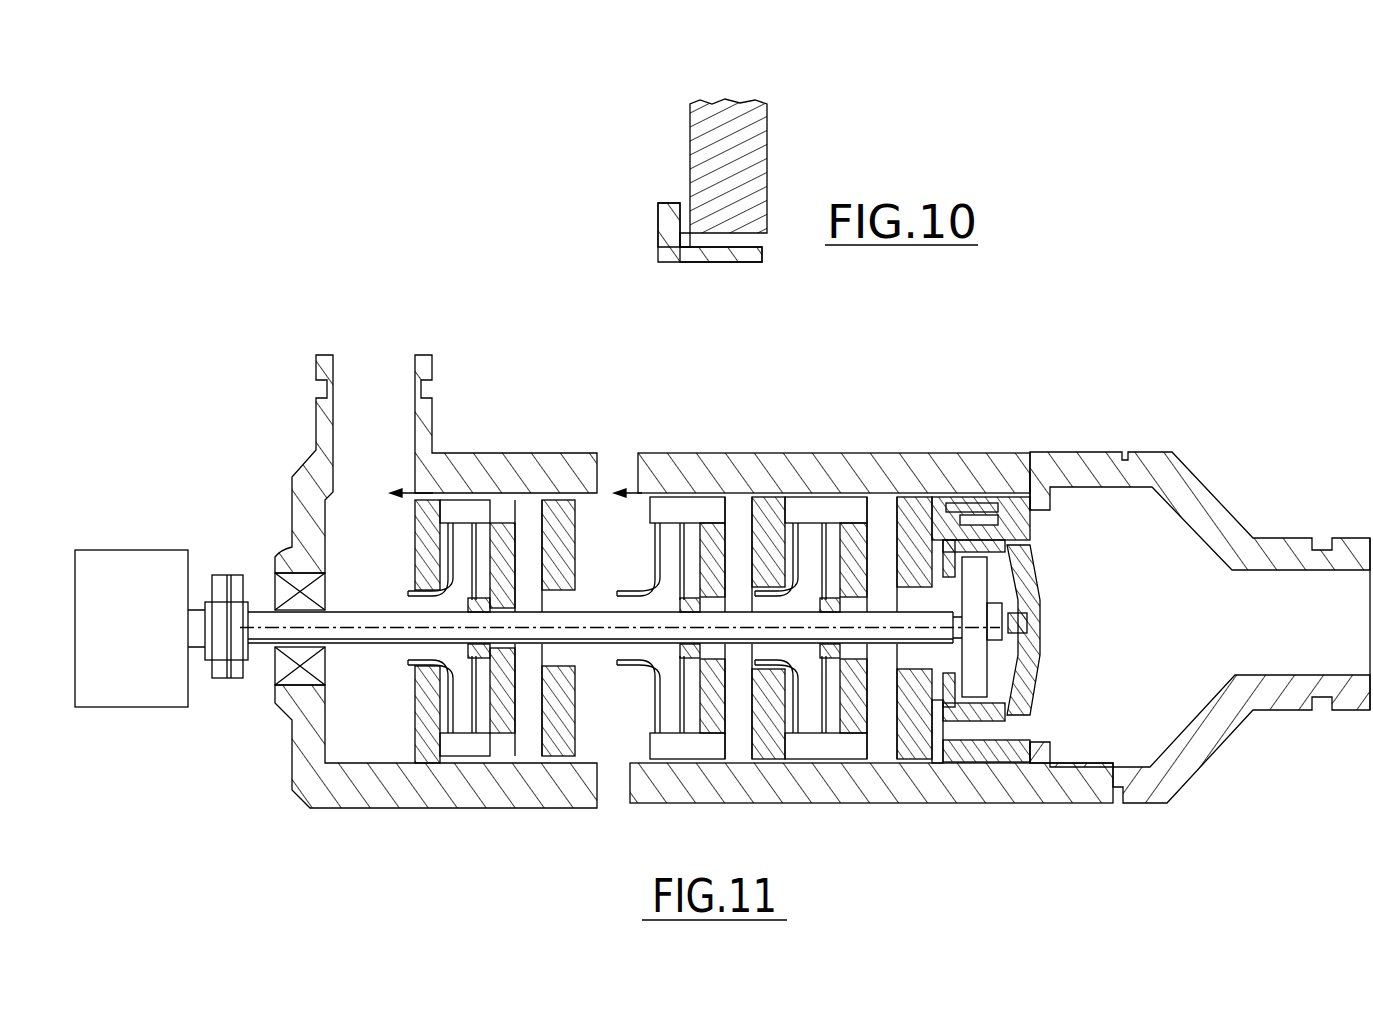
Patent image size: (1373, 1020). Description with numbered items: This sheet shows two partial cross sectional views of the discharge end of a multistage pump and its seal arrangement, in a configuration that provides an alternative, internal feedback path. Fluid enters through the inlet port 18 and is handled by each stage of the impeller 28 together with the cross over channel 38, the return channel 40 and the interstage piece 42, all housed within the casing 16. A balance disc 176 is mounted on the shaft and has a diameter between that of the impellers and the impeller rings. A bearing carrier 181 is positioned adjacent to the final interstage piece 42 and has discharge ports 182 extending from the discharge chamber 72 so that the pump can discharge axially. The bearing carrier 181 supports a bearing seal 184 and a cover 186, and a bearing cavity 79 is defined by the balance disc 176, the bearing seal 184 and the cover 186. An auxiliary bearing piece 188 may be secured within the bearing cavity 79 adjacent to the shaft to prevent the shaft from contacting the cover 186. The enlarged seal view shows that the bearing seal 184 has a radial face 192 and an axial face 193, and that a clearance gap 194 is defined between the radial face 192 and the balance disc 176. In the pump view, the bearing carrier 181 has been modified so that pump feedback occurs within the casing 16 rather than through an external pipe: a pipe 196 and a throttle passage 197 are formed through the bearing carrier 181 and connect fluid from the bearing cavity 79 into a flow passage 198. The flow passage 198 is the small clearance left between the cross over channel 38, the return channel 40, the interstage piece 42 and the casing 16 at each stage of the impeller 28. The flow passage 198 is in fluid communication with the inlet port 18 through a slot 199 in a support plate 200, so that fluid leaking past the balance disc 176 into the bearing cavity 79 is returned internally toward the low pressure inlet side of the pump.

In FIG. 11, the casing 16 is at (923, 793).
In FIG. 11, the inlet port 18 is at (378, 362).
In FIG. 11, the impeller 28 is at (487, 727).
In FIG. 11, the cross over channel 38 is at (678, 752).
In FIG. 11, the return channel 40 is at (735, 750).
In FIG. 11, the interstage piece 42 is at (765, 745).
In FIG. 11, the discharge chamber 72 is at (943, 655).
In FIG. 11, the bearing cavity 79 is at (1010, 582).
In FIG. 10, the balance disc 176 is at (735, 105).
In FIG. 11, the bearing carrier 181 is at (980, 755).
In FIG. 11, the discharge ports 182 is at (1005, 730).
In FIG. 10, the bearing seal 184 is at (672, 248).
In FIG. 11, the cover 186 is at (1027, 660).
In FIG. 11, the auxiliary bearing piece 188 is at (1000, 640).
In FIG. 10, the radial face 192 is at (660, 225).
In FIG. 10, the axial face 193 is at (720, 262).
In FIG. 10, the clearance gap 194 is at (690, 218).
In FIG. 11, the pipe 196 is at (1030, 472).
In FIG. 11, the throttle passage 197 is at (968, 505).
In FIG. 11, the flow passage 198 is at (737, 496).
In FIG. 11, the slot 199 is at (433, 496).
In FIG. 11, the support plate 200 is at (415, 735).